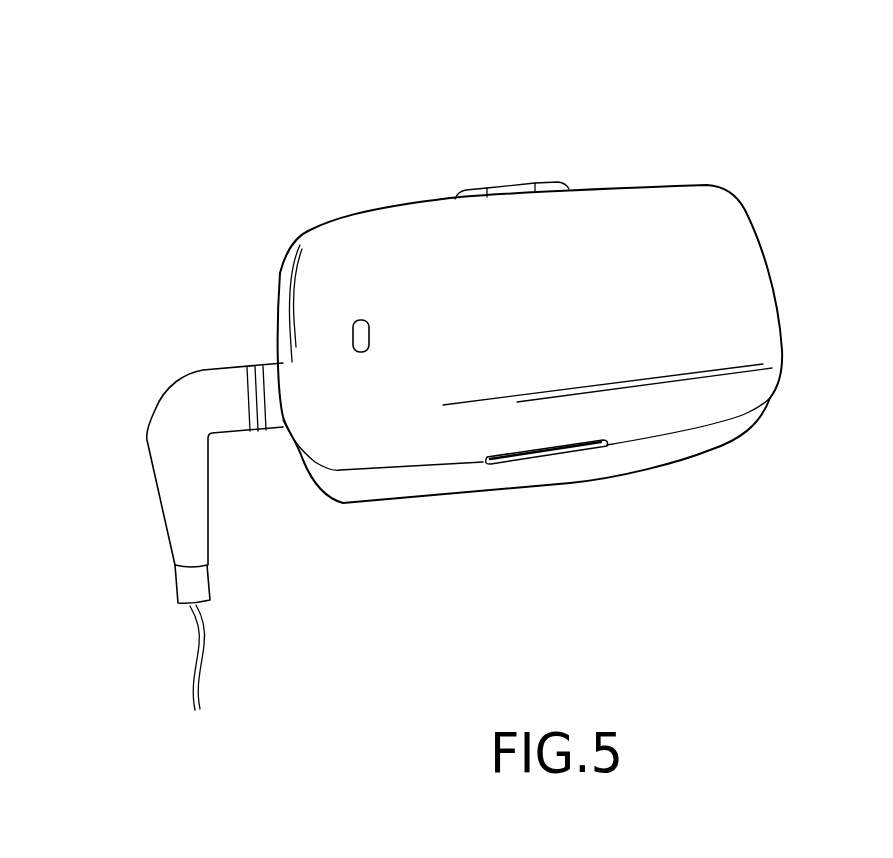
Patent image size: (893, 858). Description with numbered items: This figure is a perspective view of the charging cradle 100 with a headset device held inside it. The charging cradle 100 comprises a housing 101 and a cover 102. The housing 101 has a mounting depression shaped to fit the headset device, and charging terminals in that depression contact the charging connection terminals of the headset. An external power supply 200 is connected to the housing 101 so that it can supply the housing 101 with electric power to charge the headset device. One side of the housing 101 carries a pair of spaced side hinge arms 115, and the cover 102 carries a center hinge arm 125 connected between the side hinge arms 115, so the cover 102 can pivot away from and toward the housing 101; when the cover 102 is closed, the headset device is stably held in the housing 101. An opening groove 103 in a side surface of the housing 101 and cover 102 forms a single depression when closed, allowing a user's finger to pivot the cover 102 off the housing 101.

The charging cradle 100 is at (535, 62).
The housing 101 is at (441, 524).
The cover 102 is at (724, 166).
The opening groove 103 is at (545, 460).
The side hinge arms 115 is at (472, 190).
The center hinge arm 125 is at (508, 186).
The external power supply 200 is at (131, 497).